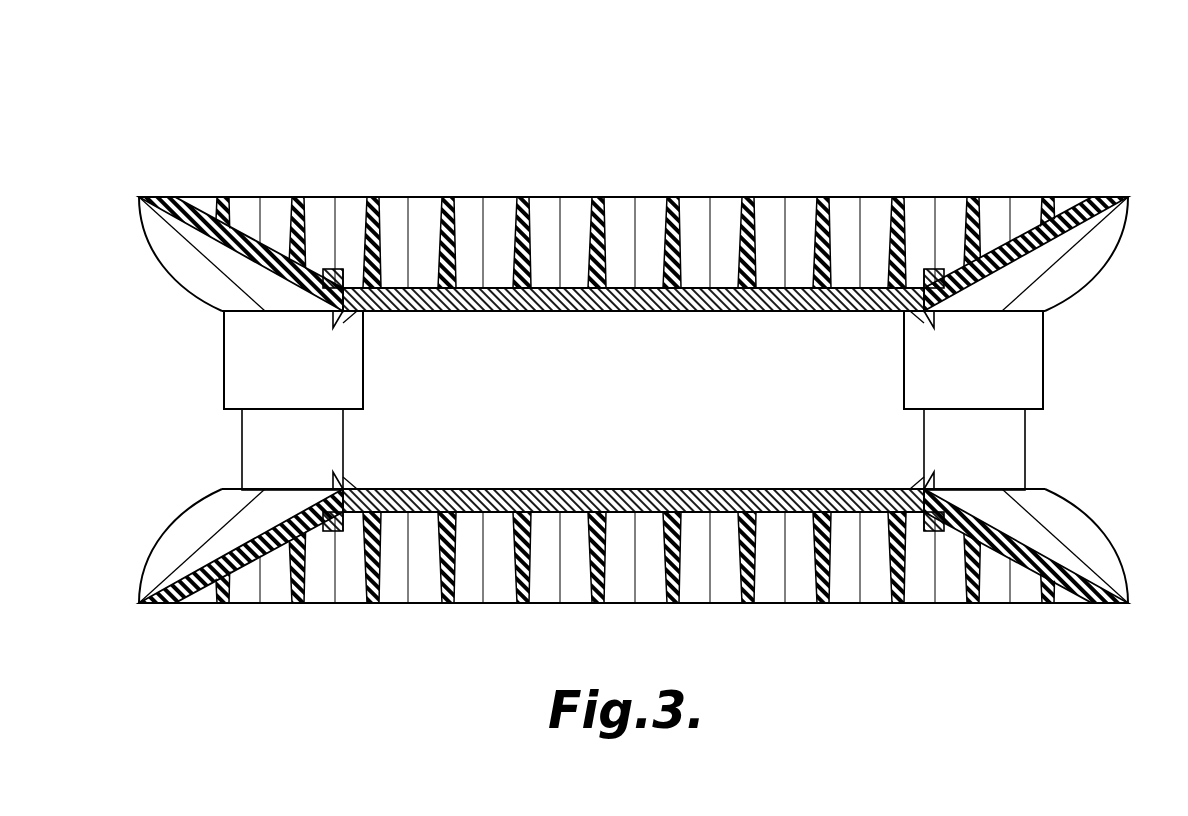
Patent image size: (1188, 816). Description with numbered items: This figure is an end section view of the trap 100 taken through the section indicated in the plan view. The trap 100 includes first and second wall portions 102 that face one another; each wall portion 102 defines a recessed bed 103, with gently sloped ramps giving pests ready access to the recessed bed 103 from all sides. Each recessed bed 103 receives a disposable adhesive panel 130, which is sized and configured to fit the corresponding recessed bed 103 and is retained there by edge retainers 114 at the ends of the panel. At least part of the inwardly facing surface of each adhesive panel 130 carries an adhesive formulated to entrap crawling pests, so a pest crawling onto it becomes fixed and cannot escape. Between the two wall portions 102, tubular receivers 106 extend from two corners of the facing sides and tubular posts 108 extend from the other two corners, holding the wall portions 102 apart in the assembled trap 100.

The trap 100 is at (388, 104).
The wall portion 102 is at (1072, 197).
The recessed bed 103 is at (633, 400).
The tubular receiver 106 is at (226, 346).
The tubular post 108 is at (242, 440).
The edge retainer 114 is at (345, 320).
The disposable adhesive panel 130 is at (700, 312).